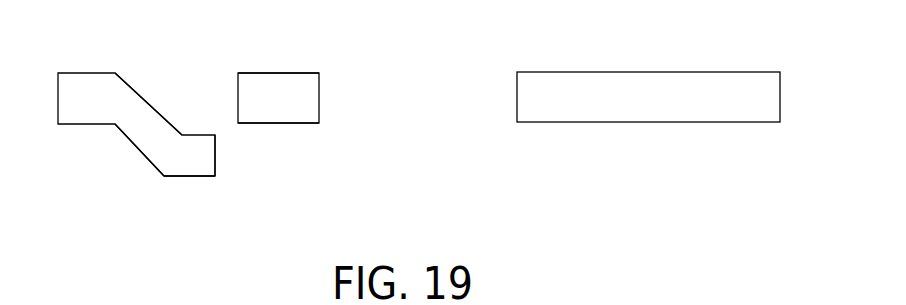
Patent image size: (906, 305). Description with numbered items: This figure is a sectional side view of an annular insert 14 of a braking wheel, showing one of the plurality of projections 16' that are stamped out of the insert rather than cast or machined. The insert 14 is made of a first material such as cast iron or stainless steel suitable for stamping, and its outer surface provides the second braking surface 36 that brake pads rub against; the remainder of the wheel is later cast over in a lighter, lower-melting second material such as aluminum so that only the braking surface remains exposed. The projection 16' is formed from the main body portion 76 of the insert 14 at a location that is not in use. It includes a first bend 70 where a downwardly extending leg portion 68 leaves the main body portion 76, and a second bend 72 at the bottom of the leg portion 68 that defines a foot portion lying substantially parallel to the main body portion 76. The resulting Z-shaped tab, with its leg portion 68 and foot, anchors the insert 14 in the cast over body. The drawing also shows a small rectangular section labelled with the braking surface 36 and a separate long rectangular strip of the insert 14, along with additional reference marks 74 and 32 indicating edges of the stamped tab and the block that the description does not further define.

The second insert 14 is at (597, 55).
The projection 16' is at (126, 129).
The first bend 70 is at (118, 70).
The leg portion 68 is at (153, 142).
The second bend 72 is at (163, 178).
The end edge 74 is at (195, 160).
The second braking surface 36 is at (300, 72).
The main body portion 76 is at (270, 92).
The bottom surface 32 is at (288, 125).